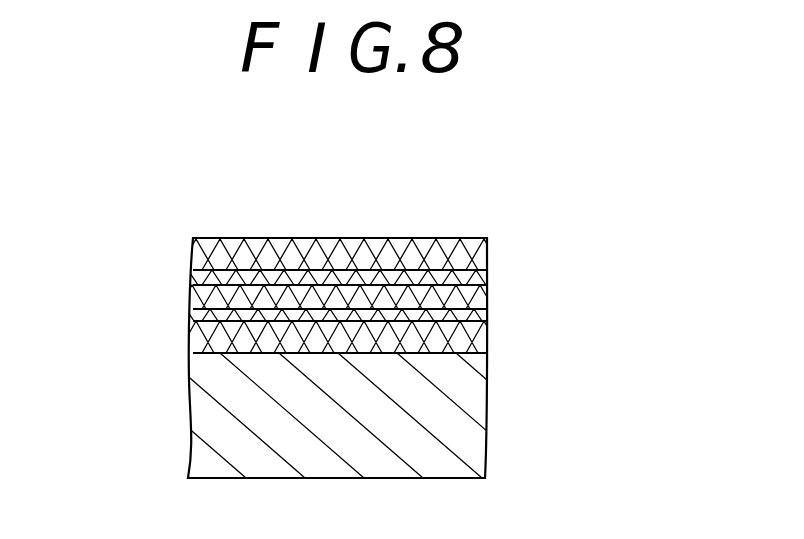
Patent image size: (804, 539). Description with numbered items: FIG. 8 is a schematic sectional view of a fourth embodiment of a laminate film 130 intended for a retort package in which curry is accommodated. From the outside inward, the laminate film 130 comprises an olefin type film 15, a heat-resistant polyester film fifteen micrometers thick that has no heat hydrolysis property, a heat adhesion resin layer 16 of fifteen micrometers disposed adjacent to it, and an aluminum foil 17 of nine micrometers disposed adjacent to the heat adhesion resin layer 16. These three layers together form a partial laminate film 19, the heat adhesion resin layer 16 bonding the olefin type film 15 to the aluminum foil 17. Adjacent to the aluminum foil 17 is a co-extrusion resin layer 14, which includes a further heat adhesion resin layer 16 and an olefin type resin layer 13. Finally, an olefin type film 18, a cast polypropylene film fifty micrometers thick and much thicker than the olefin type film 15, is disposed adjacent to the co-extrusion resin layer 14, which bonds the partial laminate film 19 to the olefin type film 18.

The laminate film 130 is at (418, 231).
The partial laminate film 19 is at (90, 213).
The co-extrusion resin layer 14 is at (92, 332).
The olefin type film 15 is at (192, 255).
The heat adhesion resin layer 16 is at (192, 277).
The aluminum foil 17 is at (192, 298).
The olefin type resin layer 13 is at (192, 340).
The olefin type film 18 is at (467, 433).